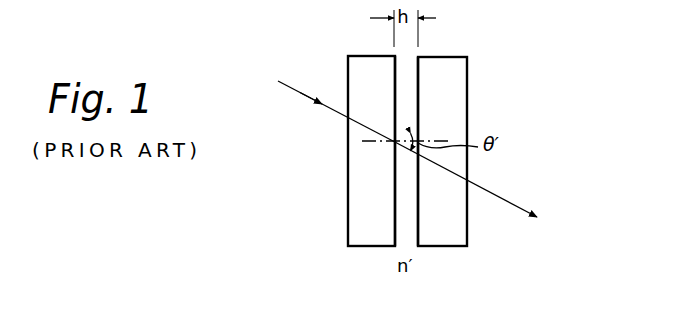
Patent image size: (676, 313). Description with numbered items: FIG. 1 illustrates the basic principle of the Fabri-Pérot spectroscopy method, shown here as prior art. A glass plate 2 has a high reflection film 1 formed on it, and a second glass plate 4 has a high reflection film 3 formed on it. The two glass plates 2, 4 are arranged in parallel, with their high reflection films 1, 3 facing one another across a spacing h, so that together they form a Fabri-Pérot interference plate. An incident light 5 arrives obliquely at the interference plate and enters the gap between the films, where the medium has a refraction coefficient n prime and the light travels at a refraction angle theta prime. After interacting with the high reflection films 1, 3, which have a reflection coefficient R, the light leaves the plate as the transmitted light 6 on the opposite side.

The high reflection film 1 is at (396, 90).
The glass plate 2 is at (354, 80).
The high reflection film 3 is at (417, 83).
The glass plate 4 is at (453, 80).
The incident light 5 is at (300, 94).
The transmitted light 6 is at (500, 192).